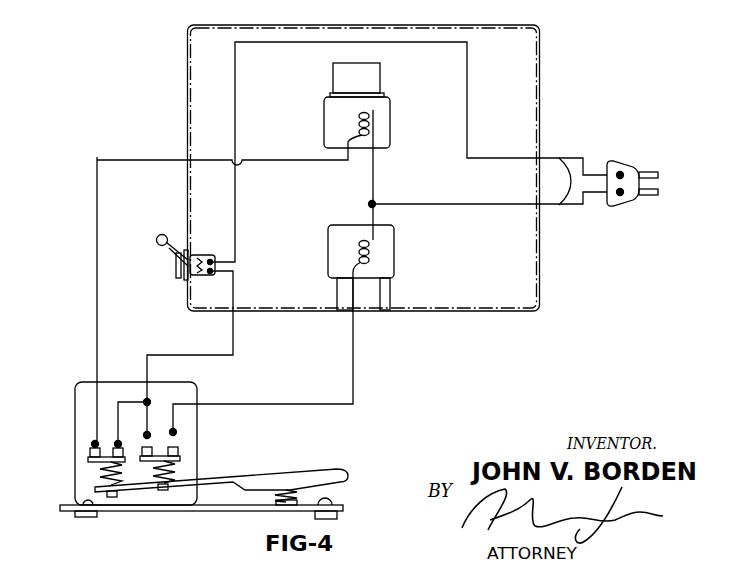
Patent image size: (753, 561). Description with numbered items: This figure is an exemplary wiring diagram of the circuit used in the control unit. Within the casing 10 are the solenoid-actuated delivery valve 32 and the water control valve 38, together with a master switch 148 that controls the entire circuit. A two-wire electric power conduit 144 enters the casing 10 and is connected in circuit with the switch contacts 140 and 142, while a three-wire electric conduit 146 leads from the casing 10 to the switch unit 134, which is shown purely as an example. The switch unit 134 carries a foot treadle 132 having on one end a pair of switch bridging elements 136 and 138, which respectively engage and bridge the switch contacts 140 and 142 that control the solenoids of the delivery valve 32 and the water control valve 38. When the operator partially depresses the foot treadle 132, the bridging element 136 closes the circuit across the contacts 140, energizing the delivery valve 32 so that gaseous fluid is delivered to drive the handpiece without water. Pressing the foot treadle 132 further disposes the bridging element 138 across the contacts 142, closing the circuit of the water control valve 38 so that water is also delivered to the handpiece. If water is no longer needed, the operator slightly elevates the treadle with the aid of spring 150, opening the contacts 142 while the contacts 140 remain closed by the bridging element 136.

The casing 10 is at (541, 233).
The delivery valve 32 is at (390, 105).
The water control valve 38 is at (394, 240).
The foot treadle 132 is at (300, 470).
The switch unit 134 is at (197, 437).
The switch bridging element 136 is at (92, 470).
The switch bridging element 138 is at (181, 459).
The switch contacts 140 is at (90, 445).
The switch contacts 142 is at (177, 432).
The two-wire electric power conduit 144 is at (553, 157).
The three-wire electric conduit 146 is at (98, 275).
The master switch 148 is at (198, 255).
The spring 150 is at (298, 495).